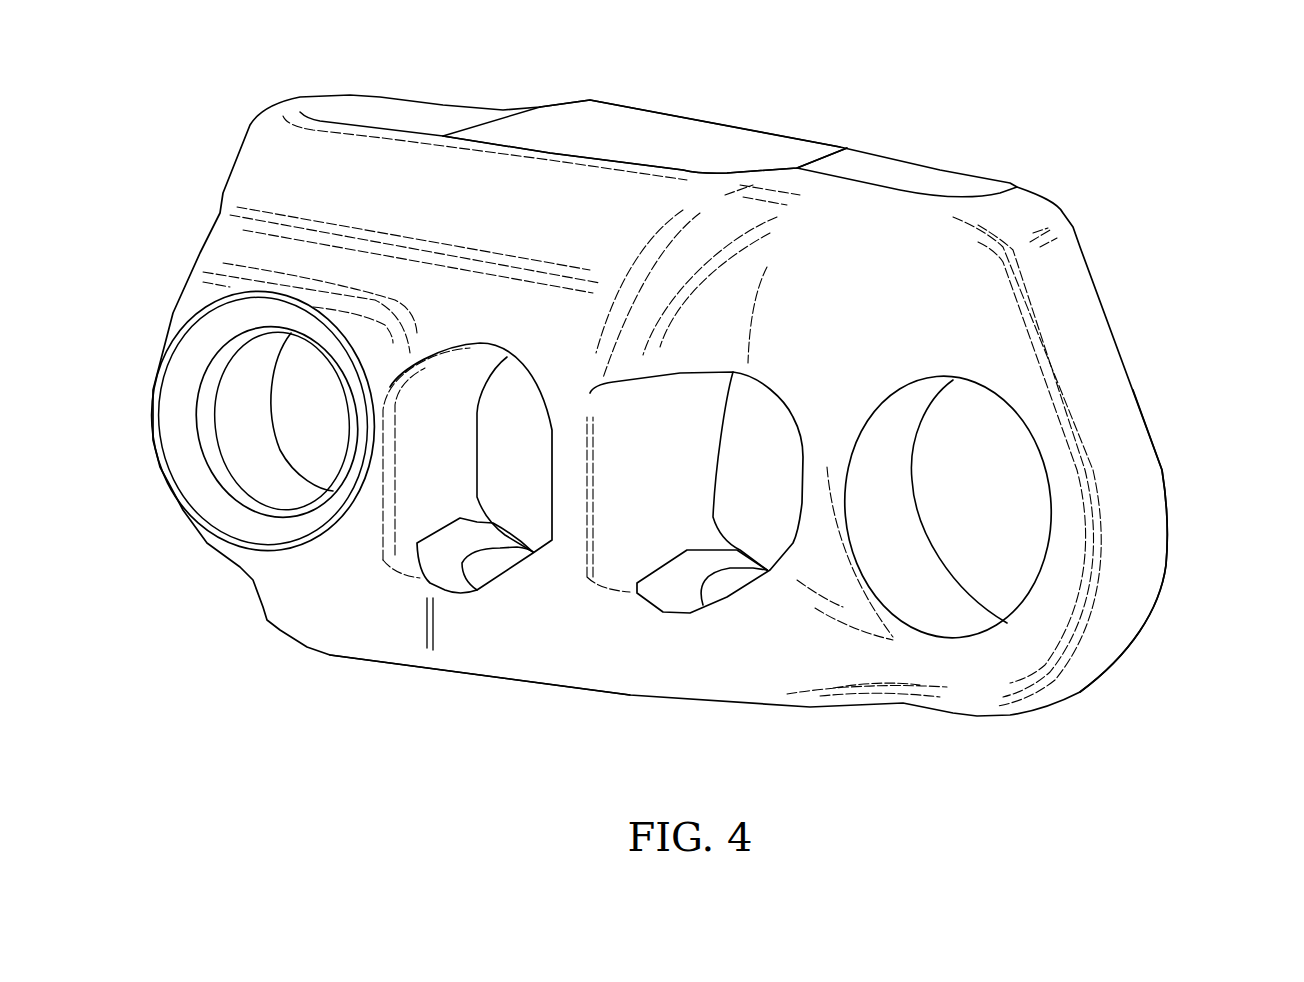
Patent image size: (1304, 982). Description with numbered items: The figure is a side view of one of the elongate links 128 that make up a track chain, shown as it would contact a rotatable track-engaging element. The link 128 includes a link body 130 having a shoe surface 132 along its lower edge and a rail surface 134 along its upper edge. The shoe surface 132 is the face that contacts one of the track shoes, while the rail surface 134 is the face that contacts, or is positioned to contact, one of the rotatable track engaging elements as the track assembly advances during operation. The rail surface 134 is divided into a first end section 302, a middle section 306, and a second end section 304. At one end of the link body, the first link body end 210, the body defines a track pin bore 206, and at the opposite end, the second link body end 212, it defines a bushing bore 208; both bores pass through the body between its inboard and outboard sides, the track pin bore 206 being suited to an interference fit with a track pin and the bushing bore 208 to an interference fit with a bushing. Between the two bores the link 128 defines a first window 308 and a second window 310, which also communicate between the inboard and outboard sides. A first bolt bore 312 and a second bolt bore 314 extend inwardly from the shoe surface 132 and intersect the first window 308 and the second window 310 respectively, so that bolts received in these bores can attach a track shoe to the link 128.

The elongate link 128 is at (252, 155).
The link body 130 is at (212, 242).
The shoe surface 132 is at (347, 661).
The rail surface 134 is at (539, 102).
The track pin bore 206 is at (242, 418).
The bushing bore 208 is at (909, 583).
The first link body end 210 is at (138, 306).
The second link body end 212 is at (1208, 552).
The first end section 302 is at (388, 110).
The second end section 304 is at (928, 180).
The middle section 306 is at (678, 137).
The first window 308 is at (427, 481).
The second window 310 is at (643, 517).
The first bolt bore 312 is at (497, 563).
The second bolt bore 314 is at (726, 583).